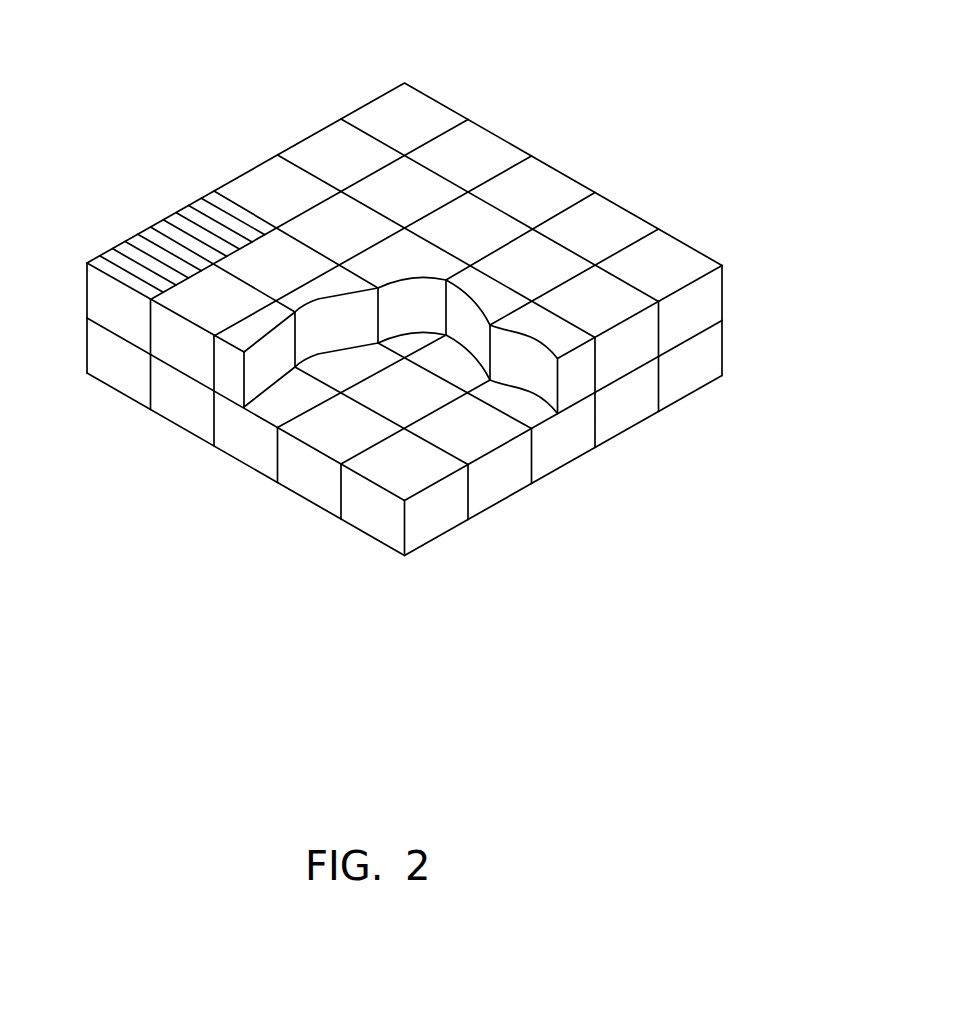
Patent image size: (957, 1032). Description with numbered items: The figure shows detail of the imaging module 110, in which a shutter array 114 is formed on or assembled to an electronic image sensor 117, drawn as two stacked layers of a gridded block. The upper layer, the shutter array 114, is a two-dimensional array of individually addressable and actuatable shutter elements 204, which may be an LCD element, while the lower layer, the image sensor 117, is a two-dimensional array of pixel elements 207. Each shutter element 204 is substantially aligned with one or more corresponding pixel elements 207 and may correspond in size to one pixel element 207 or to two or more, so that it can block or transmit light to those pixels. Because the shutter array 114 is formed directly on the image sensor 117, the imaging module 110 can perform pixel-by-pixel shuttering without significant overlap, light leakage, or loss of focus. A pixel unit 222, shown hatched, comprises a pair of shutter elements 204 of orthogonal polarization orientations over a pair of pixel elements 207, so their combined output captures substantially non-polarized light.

The imaging module 110 is at (441, 365).
The shutter array 114 is at (441, 226).
The image sensor 117 is at (455, 471).
The shutter element 204 is at (470, 152).
The pixel element 207 is at (455, 433).
The pixel unit 222 is at (199, 184).